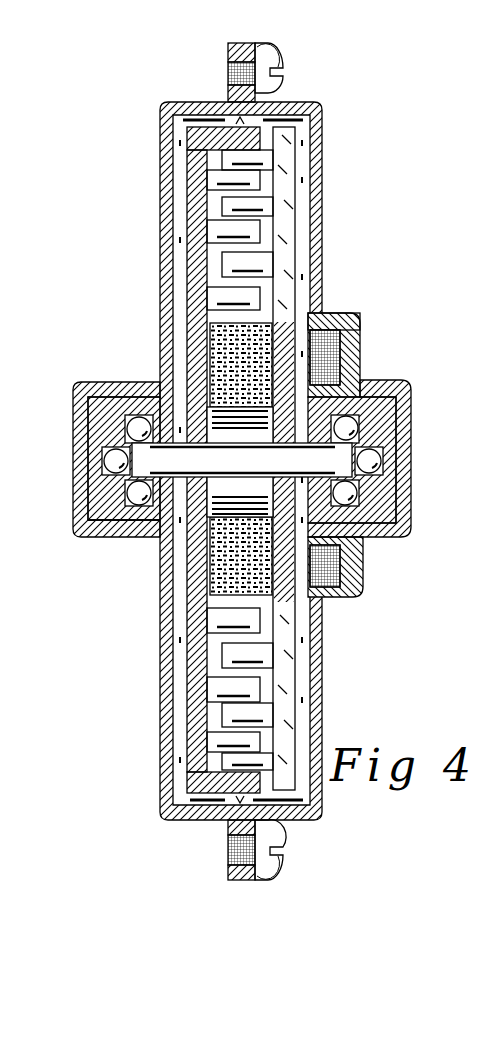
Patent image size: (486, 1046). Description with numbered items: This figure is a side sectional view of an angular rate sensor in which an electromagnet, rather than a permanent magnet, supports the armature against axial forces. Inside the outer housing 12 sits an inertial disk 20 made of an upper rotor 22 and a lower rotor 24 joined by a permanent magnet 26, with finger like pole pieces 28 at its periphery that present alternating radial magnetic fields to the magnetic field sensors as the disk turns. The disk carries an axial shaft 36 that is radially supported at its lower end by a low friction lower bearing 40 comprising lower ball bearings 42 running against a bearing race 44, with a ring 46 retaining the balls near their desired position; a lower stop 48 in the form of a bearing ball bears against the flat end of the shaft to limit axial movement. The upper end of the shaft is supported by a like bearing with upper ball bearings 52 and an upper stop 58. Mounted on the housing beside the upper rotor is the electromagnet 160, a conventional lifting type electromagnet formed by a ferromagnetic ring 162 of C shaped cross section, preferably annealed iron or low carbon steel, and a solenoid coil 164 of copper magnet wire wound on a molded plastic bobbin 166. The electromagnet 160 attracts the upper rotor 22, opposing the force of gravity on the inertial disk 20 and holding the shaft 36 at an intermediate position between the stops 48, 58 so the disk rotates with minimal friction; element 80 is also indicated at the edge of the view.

The outer housing 12 is at (156, 397).
The inertial disk 20 is at (226, 807).
The upper rotor 22 is at (288, 153).
The lower rotor 24 is at (190, 752).
The permanent magnet 26 is at (223, 347).
The pole piece 28 is at (247, 455).
The axial shaft 36 is at (186, 488).
The lower ball bearing 40 is at (85, 540).
The lower ball bearings 42 is at (160, 523).
The bearing race 44 is at (138, 506).
The ring 46 is at (159, 398).
The lower stop 48 is at (115, 455).
The upper ball bearings 52 is at (350, 495).
The upper stop 58 is at (369, 462).
The shaft 80 is at (0, 593).
The electromagnet 160 is at (358, 370).
The ferromagnetic ring 162 is at (336, 566).
The solenoid coil 164 is at (325, 328).
The bobbin 166 is at (357, 314).